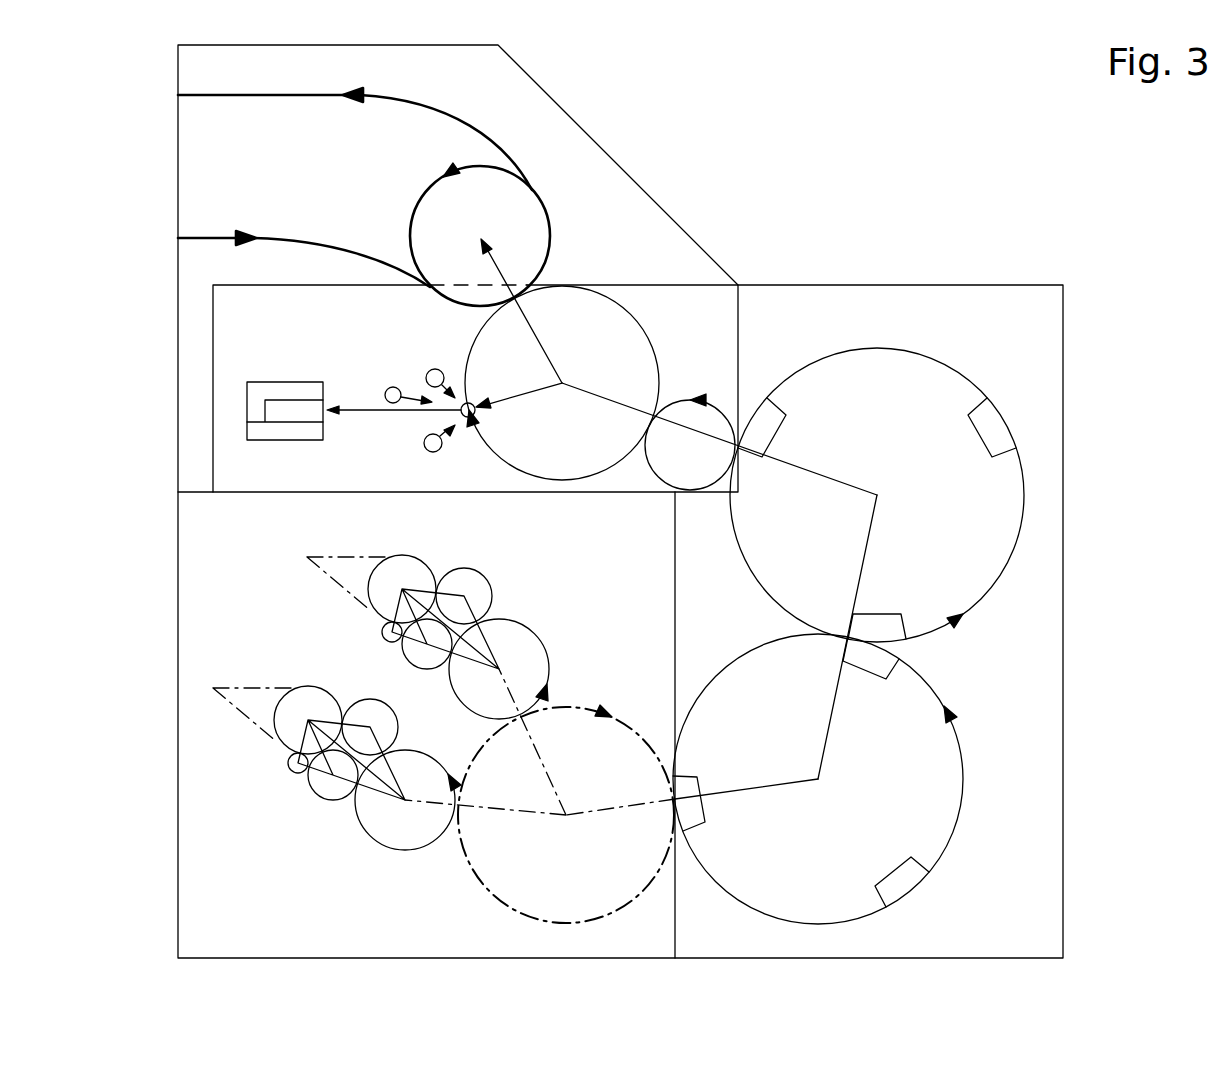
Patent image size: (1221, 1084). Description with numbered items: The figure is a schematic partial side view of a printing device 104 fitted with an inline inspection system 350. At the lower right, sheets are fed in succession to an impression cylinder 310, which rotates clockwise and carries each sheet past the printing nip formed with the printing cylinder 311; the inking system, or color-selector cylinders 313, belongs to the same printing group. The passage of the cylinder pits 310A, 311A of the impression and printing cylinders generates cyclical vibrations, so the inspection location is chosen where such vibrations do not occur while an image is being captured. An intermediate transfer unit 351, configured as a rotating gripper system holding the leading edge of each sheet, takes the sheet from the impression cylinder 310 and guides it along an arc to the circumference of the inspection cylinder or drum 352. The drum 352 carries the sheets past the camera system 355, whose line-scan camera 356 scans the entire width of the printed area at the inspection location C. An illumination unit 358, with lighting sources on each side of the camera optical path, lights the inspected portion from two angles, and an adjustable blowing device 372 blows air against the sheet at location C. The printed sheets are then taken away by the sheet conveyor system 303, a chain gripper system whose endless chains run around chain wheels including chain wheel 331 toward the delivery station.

The printing device 104 is at (631, 504).
The sheet conveyor system 303 is at (472, 130).
The chain wheel 331 is at (547, 203).
The inline inspection system 350 is at (213, 320).
The intermediate transfer unit 351 is at (722, 405).
The inspection cylinder or drum 352 is at (640, 323).
The camera system 355 is at (247, 410).
The line-scan camera 356 is at (265, 422).
The illumination unit 358 is at (461, 416).
The adjustable blowing device 372 is at (385, 392).
The inspection location C is at (461, 413).
The impression cylinder 310 is at (949, 563).
The cylinder pit 310A is at (847, 638).
The printing cylinder 311 is at (867, 782).
The cylinder pit 311A is at (867, 643).
The color-selector cylinders 313 is at (178, 853).